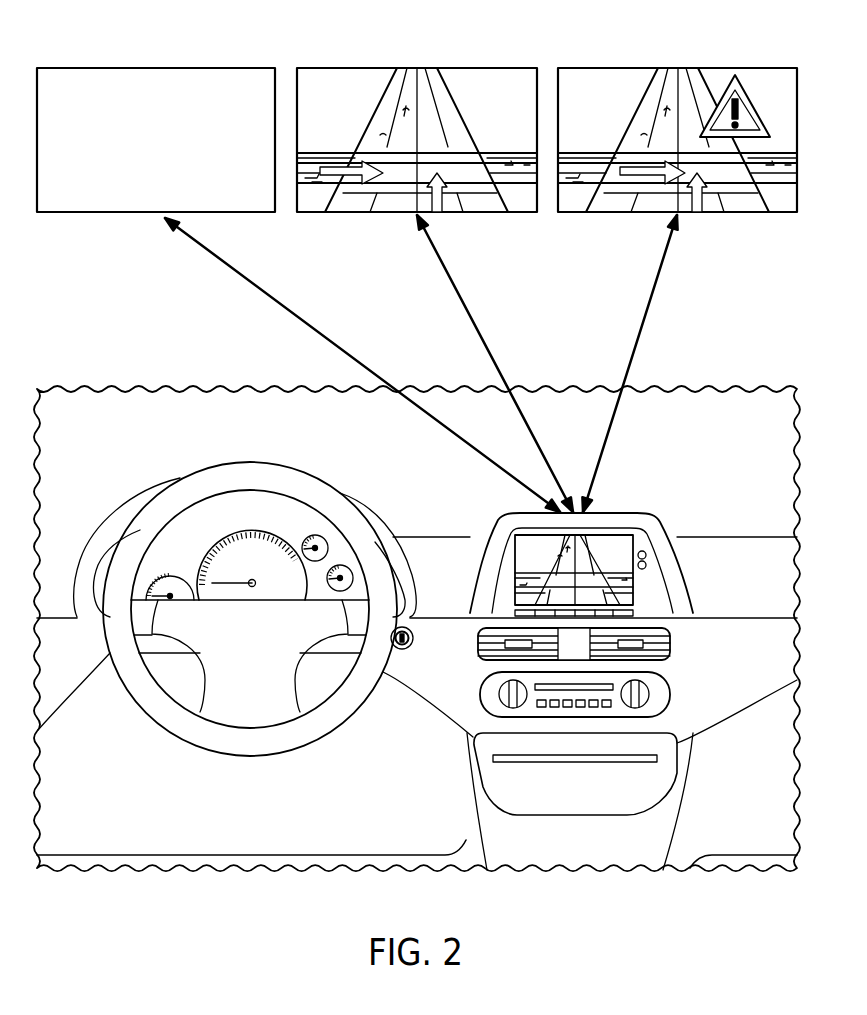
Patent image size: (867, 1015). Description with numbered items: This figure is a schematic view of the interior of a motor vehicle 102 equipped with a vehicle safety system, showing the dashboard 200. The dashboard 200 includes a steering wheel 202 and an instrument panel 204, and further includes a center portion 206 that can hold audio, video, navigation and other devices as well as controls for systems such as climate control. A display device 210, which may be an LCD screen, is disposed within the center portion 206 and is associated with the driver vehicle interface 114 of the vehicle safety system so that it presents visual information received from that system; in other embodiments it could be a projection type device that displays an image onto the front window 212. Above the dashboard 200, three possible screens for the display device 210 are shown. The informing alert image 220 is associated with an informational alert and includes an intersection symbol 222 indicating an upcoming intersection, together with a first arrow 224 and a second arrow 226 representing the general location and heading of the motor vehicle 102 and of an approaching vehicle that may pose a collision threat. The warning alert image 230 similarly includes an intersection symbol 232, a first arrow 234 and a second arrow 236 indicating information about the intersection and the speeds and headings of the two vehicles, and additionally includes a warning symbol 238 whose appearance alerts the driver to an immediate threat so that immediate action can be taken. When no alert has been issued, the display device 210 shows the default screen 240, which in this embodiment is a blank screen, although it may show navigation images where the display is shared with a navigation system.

The motor vehicle 102 is at (766, 364).
The driver vehicle interface 114 is at (613, 535).
The dashboard 200 is at (437, 548).
The steering wheel 202 is at (198, 485).
The instrument panel 204 is at (247, 517).
The center portion 206 is at (466, 680).
The display device 210 is at (633, 603).
The front window 212 is at (380, 450).
The informing alert image 220 is at (417, 132).
The intersection symbol 222 is at (460, 110).
The first arrow 224 is at (445, 200).
The second arrow 226 is at (335, 172).
The warning alert image 230 is at (673, 145).
The intersection symbol 232 is at (635, 110).
The first arrow 234 is at (703, 207).
The second arrow 236 is at (652, 175).
The warning symbol 238 is at (740, 90).
The default screen 240 is at (128, 68).